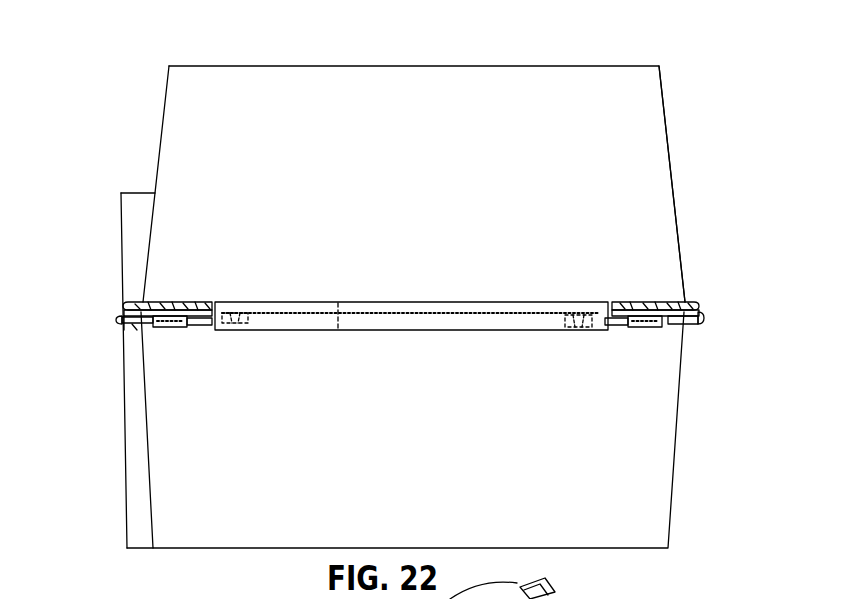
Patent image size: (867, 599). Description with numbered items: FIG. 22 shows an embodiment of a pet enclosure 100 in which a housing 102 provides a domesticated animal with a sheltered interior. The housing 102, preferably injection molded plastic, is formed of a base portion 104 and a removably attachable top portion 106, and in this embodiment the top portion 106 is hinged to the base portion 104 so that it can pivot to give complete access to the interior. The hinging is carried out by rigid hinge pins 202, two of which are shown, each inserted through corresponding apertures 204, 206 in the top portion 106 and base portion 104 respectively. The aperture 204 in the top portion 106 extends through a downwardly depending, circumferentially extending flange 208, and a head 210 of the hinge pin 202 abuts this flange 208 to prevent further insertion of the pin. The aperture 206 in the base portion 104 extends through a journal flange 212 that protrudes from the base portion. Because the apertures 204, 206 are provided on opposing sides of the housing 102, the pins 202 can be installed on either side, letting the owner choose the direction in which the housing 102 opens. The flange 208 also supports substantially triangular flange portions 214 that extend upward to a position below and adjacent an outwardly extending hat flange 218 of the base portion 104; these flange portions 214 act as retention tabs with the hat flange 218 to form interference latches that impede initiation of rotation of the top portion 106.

The assembly 100 is at (165, 43).
The housing 102 is at (164, 110).
The base portion 104 is at (662, 427).
The top portion 106 is at (662, 147).
The hinge pin 202 is at (147, 327).
The aperture 204 is at (123, 327).
The aperture 206 is at (212, 322).
The flange 208 is at (390, 325).
The head 210 is at (119, 321).
The journal flange 212 is at (175, 327).
The flange portion 214 is at (237, 300).
The hat flange 218 is at (338, 332).